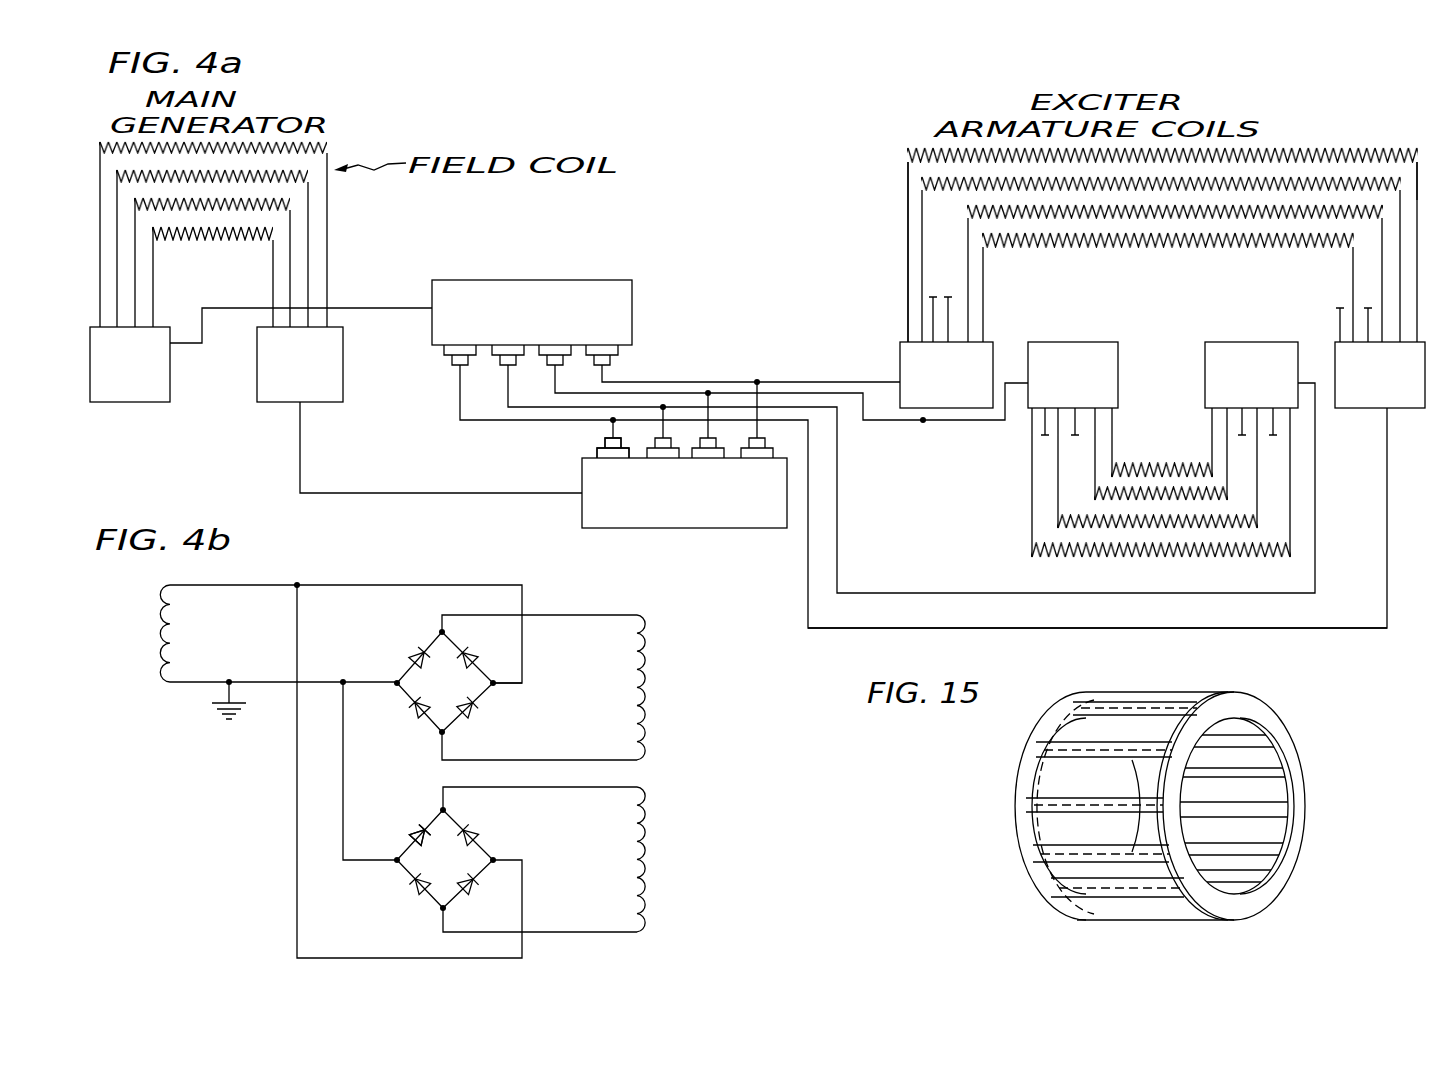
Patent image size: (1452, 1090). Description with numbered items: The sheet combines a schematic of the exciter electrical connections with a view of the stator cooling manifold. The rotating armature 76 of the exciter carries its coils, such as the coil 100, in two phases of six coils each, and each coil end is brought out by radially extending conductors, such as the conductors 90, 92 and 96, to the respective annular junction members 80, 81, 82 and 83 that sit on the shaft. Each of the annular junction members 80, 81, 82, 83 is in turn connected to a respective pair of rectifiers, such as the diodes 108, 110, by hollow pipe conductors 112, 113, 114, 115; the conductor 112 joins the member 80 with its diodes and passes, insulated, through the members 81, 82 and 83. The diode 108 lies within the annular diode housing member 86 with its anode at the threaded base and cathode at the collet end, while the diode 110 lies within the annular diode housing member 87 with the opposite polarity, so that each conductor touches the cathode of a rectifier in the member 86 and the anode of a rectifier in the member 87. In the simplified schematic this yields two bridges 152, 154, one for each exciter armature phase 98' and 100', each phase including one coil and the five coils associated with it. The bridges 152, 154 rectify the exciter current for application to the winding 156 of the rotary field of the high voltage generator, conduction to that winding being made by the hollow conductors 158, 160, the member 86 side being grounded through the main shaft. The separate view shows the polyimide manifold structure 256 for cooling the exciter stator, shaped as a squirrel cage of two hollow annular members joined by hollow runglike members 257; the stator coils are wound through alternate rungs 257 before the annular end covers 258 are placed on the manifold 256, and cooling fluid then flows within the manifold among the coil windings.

In FIG. 4A, the rotating armature 76 is at (895, 270).
In FIG. 4A, the annular junction member 80 is at (1387, 390).
In FIG. 4A, the annular junction member 81 is at (1258, 390).
In FIG. 4A, the annular junction member 82 is at (1080, 390).
In FIG. 4A, the annular junction member 83 is at (955, 390).
In FIG. 4A, the annular diode housing member 86 is at (745, 527).
In FIG. 4B, the annular diode housing member 86 is at (396, 682).
In FIG. 4A, the annular diode housing member 87 is at (490, 280).
In FIG. 4B, the annular diode housing member 87 is at (470, 578).
In FIG. 4A, the conductor 90 is at (1418, 152).
In FIG. 4A, the conductor 92 is at (908, 226).
In FIG. 4A, the conductor 96 is at (1032, 498).
In FIG. 4A, the coil 100 is at (1161, 566).
In FIG. 4A, the diode 108 is at (582, 450).
In FIG. 4B, the diode 108 is at (410, 840).
In FIG. 4A, the diode 110 is at (440, 352).
In FIG. 4A, the conductor 112 is at (1030, 629).
In FIG. 4B, the conductor 112 is at (553, 786).
In FIG. 4A, the conductor 113 is at (928, 592).
In FIG. 4A, the conductor 114 is at (922, 421).
In FIG. 4A, the conductor 115 is at (833, 372).
In FIG. 4B, the bridge 152 is at (412, 881).
In FIG. 4B, the bridge 154 is at (497, 688).
In FIG. 4B, the winding 156 is at (160, 621).
In FIG. 4B, the hollow conductor 158 is at (270, 570).
In FIG. 4B, the hollow conductor 160 is at (188, 682).
In FIG. 4B, the phase of the exciter armature 100' is at (584, 687).
In FIG. 4B, the phase of the exciter armature 98' is at (576, 859).
In FIG. 15, the manifold structure 256 is at (1161, 781).
In FIG. 15, the runglike members 257 is at (1045, 748).
In FIG. 15, the annular end covers 258 is at (1283, 727).